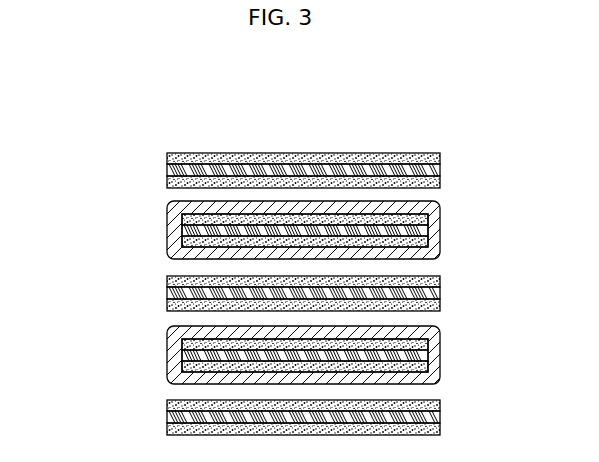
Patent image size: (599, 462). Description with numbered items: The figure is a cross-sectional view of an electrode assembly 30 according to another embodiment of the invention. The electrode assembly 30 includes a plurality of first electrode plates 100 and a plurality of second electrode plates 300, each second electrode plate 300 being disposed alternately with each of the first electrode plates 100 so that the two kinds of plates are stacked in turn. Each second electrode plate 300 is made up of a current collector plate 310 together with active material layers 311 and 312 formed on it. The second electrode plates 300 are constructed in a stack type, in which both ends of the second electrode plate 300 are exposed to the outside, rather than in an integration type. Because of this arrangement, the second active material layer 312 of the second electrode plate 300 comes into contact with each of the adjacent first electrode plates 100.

The electrode assembly 30 is at (492, 103).
The second electrode plate 300 is at (140, 164).
The first electrode plate 100 is at (140, 223).
The active material layer 311 is at (427, 152).
The current collector plate 310 is at (442, 169).
The second active material layer 312 is at (433, 188).